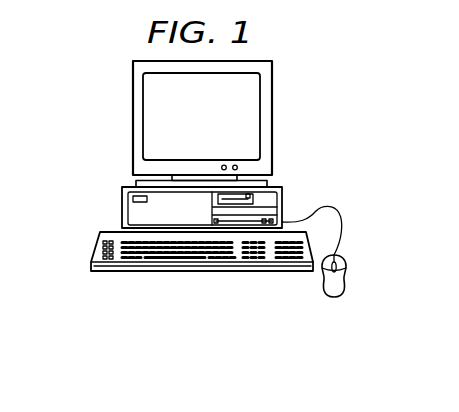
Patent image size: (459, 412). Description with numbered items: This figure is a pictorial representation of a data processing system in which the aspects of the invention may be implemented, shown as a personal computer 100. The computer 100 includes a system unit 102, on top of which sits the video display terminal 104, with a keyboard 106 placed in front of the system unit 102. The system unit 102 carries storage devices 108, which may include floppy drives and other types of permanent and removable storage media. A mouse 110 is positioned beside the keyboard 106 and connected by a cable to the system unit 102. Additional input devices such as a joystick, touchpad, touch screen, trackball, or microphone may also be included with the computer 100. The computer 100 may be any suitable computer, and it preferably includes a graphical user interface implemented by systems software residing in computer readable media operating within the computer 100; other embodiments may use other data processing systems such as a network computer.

The computer 100 is at (72, 107).
The system unit 102 is at (121, 207).
The video display terminal 104 is at (272, 118).
The keyboard 106 is at (117, 271).
The storage devices 108 is at (253, 200).
The mouse 110 is at (334, 297).